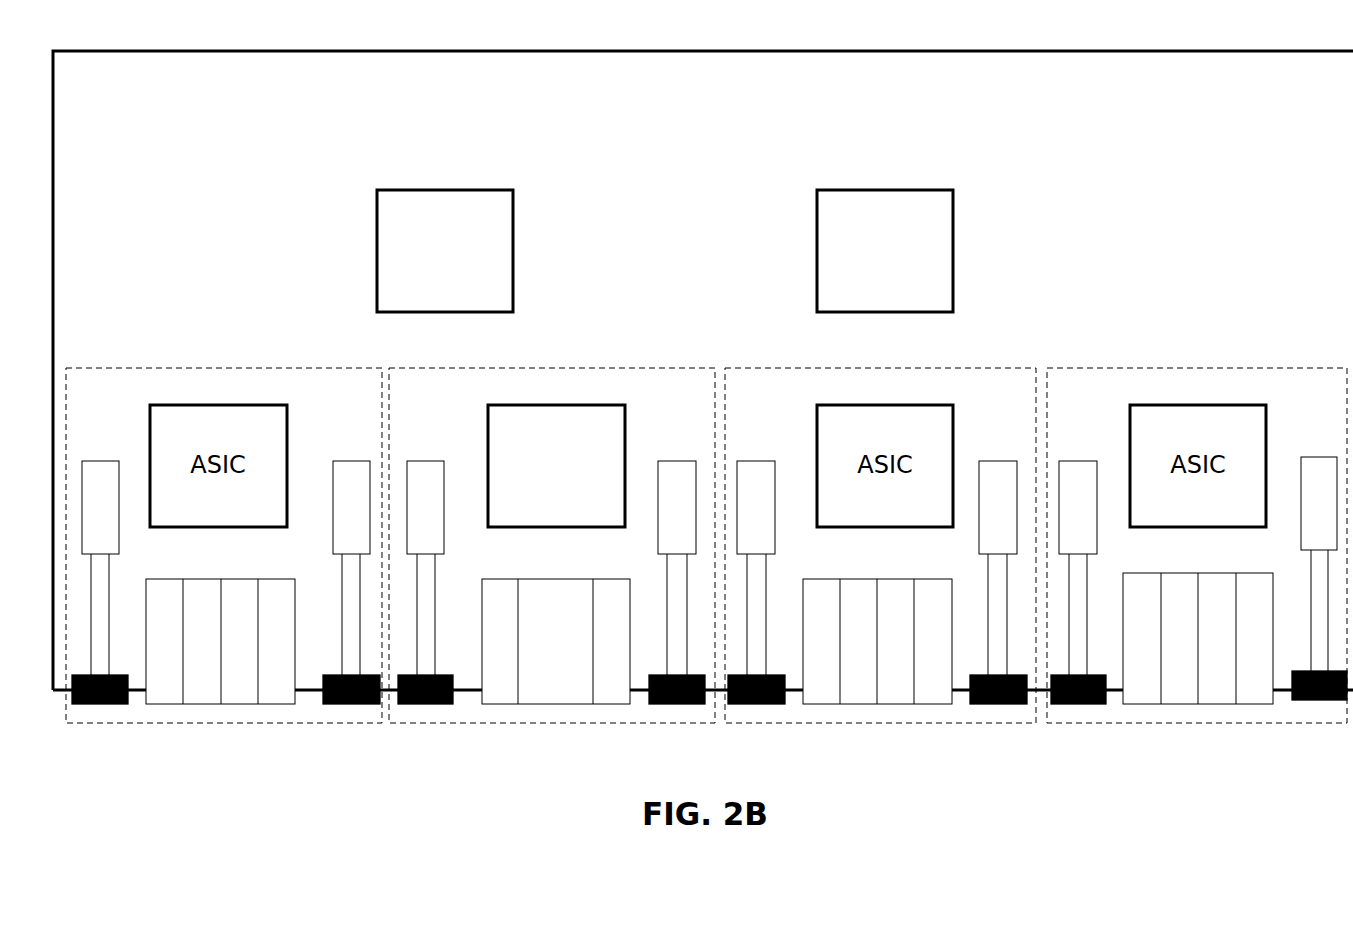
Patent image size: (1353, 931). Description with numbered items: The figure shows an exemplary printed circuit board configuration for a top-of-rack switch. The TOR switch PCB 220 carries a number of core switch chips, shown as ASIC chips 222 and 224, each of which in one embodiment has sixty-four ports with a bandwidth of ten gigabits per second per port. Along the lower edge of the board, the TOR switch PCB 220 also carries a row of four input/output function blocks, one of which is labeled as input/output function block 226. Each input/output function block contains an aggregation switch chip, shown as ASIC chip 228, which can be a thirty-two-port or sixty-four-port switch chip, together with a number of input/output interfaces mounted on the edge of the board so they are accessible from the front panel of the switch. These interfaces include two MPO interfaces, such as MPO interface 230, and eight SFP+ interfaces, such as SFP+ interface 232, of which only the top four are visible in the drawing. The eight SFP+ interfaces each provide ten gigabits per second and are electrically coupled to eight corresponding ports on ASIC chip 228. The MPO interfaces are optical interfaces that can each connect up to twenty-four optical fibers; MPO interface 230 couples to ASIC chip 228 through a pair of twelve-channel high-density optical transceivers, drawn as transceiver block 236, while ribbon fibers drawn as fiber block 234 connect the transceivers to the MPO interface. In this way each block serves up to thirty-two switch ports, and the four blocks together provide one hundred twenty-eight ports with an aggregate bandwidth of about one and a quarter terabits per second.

The TOR switch PCB 220 is at (837, 113).
The ASIC chip 222 is at (425, 188).
The ASIC chip 224 is at (853, 188).
The input/output function block 226 is at (518, 367).
The ASIC chip 228 is at (556, 466).
The MPO interface 230 is at (427, 704).
The SFP+ interface 232 is at (500, 704).
The fiber block 234 is at (435, 628).
The transceiver block 236 is at (407, 460).